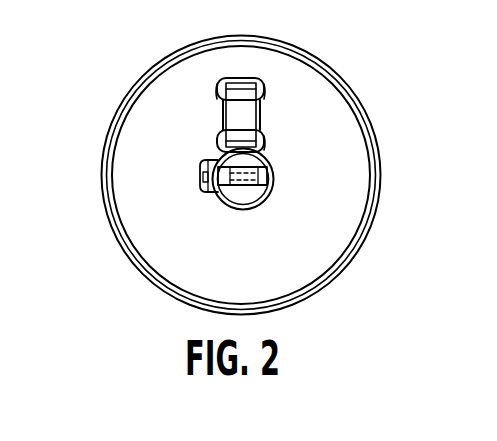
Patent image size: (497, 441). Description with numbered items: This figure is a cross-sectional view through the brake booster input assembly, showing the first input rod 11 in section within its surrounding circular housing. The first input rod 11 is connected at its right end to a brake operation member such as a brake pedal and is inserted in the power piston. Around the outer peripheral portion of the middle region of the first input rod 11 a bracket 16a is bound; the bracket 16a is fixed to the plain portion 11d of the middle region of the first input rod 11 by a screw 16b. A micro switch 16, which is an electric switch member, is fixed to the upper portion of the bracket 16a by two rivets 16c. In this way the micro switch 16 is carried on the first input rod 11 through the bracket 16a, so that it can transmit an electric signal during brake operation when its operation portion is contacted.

The first input rod 11 is at (250, 187).
The plain portion 11d is at (212, 192).
The micro switch 16 is at (246, 88).
The bracket 16a is at (219, 120).
The screw 16b is at (206, 165).
The rivets 16c is at (262, 135).